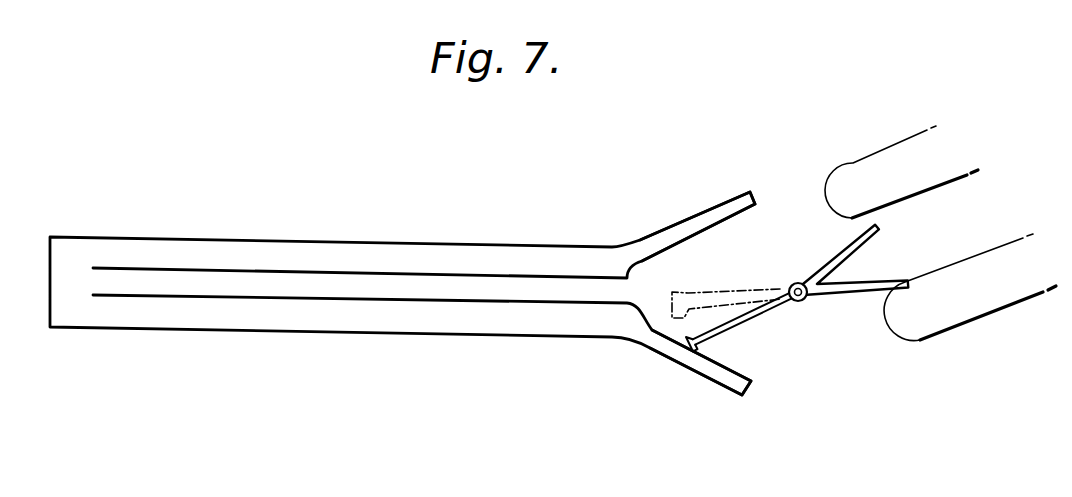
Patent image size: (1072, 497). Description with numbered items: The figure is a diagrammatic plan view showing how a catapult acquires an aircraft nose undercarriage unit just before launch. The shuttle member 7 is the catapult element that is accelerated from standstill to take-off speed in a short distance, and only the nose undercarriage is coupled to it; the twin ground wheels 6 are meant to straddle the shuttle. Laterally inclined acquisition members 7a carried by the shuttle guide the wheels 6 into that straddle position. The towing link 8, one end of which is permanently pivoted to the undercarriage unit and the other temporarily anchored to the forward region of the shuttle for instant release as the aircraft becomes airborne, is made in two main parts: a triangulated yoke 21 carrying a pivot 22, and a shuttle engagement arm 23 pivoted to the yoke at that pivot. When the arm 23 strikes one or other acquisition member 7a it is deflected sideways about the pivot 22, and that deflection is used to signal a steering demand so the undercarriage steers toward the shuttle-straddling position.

The twin ground wheels 6 is at (876, 163).
The shuttle member 7 is at (302, 241).
The acquisition members 7a is at (682, 223).
The towing link 8 is at (761, 312).
The triangulated yoke 21 is at (872, 293).
The pivot 22 is at (801, 283).
The shuttle engagement arm 23 is at (719, 327).